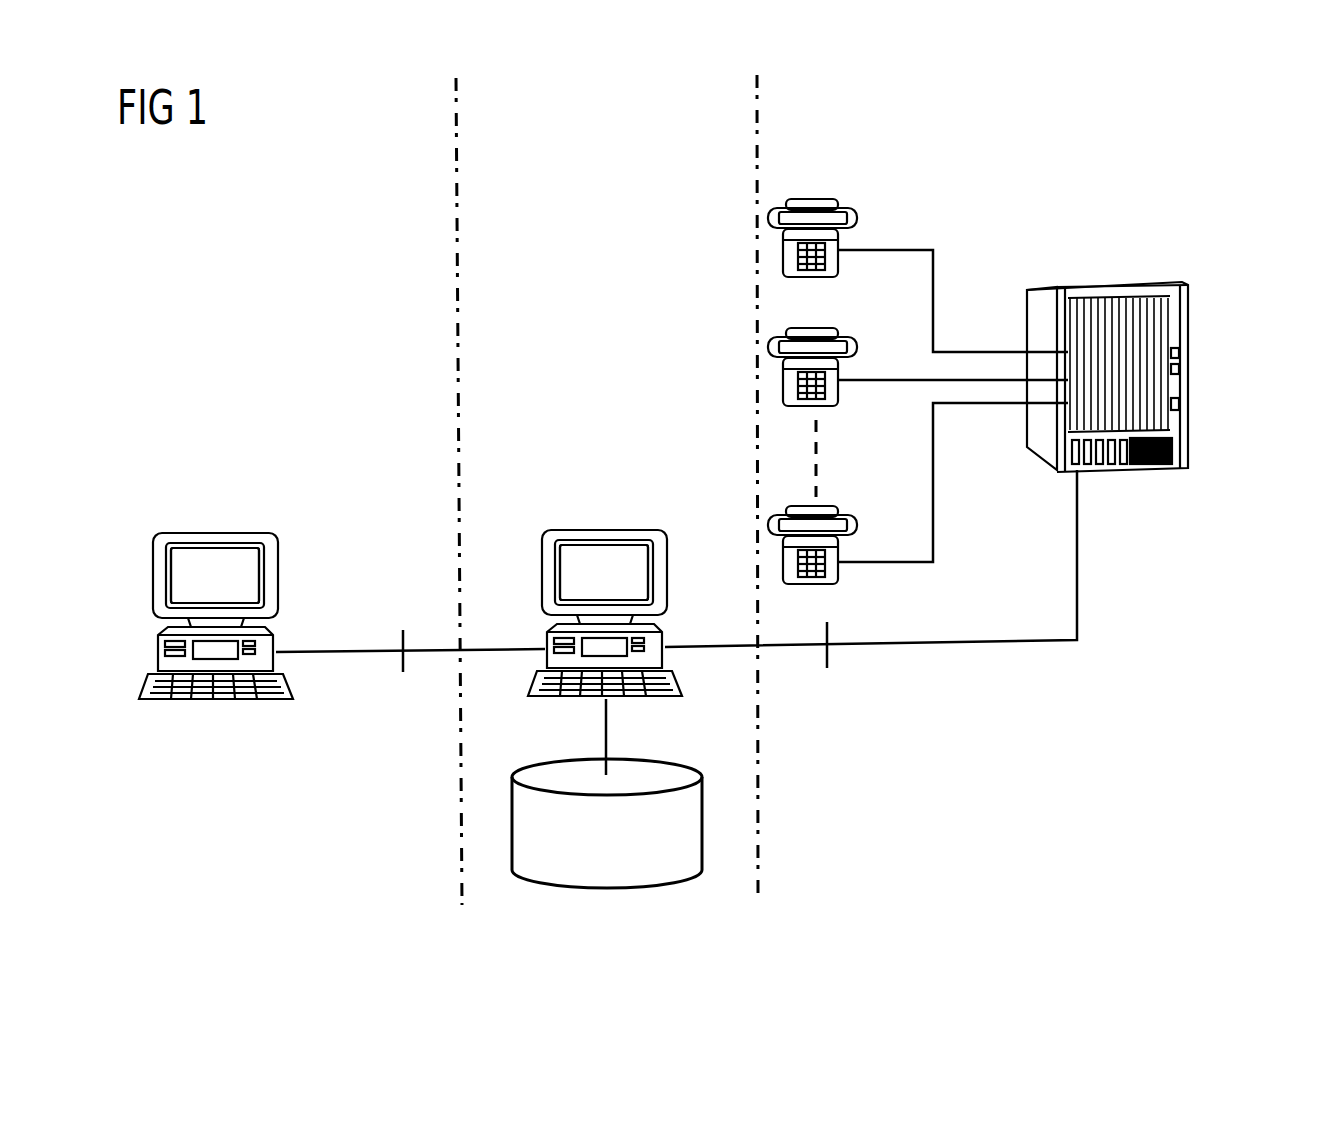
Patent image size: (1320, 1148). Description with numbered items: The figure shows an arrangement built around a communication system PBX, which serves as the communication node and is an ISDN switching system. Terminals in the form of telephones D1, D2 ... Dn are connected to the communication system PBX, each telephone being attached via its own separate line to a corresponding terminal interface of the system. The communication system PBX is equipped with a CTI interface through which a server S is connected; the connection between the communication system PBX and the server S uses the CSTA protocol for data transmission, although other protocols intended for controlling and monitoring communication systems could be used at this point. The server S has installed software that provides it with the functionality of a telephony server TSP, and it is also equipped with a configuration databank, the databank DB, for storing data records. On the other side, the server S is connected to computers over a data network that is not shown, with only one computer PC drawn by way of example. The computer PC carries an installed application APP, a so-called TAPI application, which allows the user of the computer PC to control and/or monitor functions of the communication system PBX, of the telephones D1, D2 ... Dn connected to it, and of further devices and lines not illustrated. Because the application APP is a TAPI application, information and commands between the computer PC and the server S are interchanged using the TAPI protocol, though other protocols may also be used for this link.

The computer PC is at (249, 626).
The application APP is at (243, 573).
The TAPI protocol TAPI is at (410, 673).
The server S is at (629, 574).
The telephony server TSP is at (625, 548).
The configuration databank DB is at (548, 870).
The CSTA protocol CSTA is at (871, 589).
The telephone D1 is at (820, 198).
The telephone D2 is at (820, 327).
The telephone Dn is at (820, 505).
The communication system PBX is at (1173, 337).